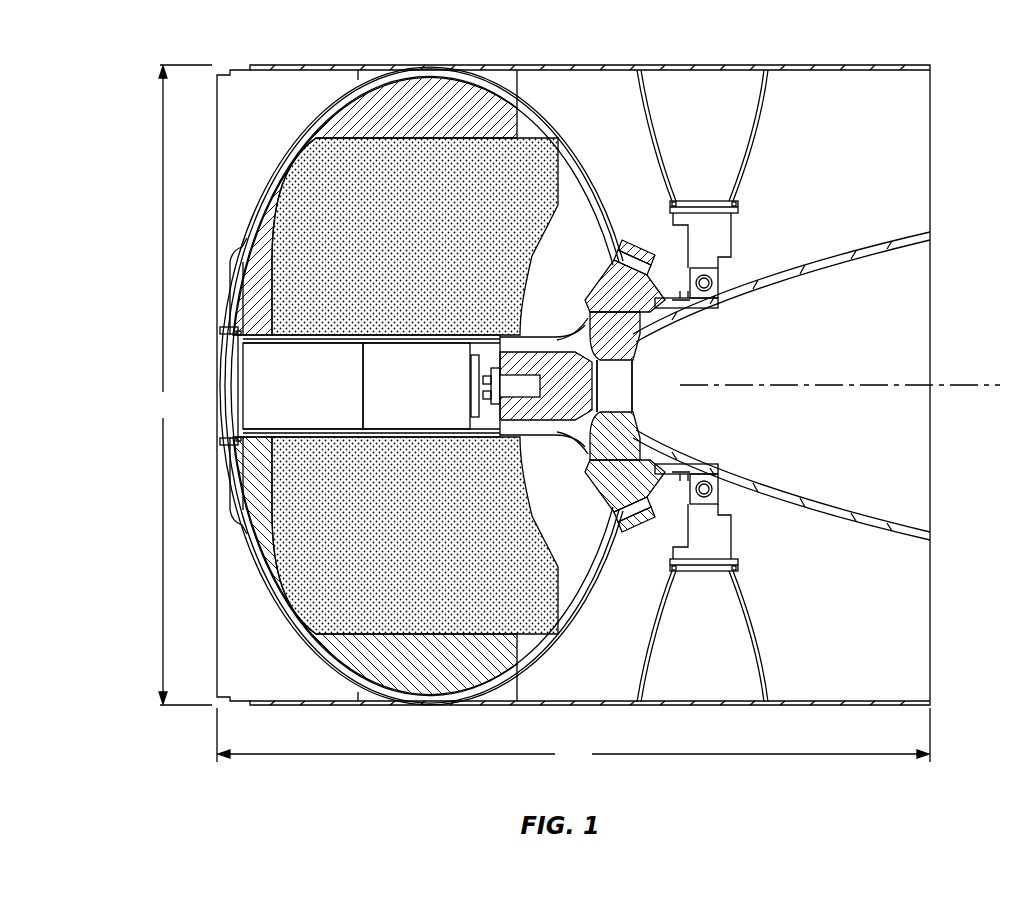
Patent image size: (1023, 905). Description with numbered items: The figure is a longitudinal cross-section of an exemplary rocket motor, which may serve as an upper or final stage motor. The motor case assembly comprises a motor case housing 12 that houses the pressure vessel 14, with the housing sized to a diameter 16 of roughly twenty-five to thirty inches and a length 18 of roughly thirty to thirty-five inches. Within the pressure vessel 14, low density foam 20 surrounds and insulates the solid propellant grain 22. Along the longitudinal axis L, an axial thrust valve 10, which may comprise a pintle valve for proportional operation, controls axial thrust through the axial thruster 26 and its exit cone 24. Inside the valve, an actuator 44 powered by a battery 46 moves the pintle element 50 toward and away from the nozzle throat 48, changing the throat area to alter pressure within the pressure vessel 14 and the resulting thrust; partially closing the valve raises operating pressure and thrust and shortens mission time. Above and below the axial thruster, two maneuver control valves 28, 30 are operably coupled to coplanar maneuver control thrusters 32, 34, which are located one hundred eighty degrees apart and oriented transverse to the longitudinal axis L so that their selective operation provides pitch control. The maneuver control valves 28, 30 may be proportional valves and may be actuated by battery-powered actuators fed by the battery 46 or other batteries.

The axial thrust valve 10 is at (603, 387).
The motor case housing 12 is at (862, 64).
The pressure vessel 14 is at (323, 112).
The diameter 16 is at (183, 385).
The length 18 is at (573, 737).
The low density foam 20 is at (381, 109).
The solid propellant grain 22 is at (518, 177).
The exit cone 24 is at (863, 257).
The axial thruster 26 is at (932, 540).
The maneuver control valve 28 is at (716, 278).
The maneuver control valve 30 is at (717, 488).
The maneuver control thruster 32 is at (760, 138).
The maneuver control thruster 34 is at (768, 653).
The actuator 44 is at (431, 386).
The battery 46 is at (369, 386).
The nozzle throat 48 is at (619, 378).
The pintle element 50 is at (562, 368).
The longitudinal axis L is at (847, 387).